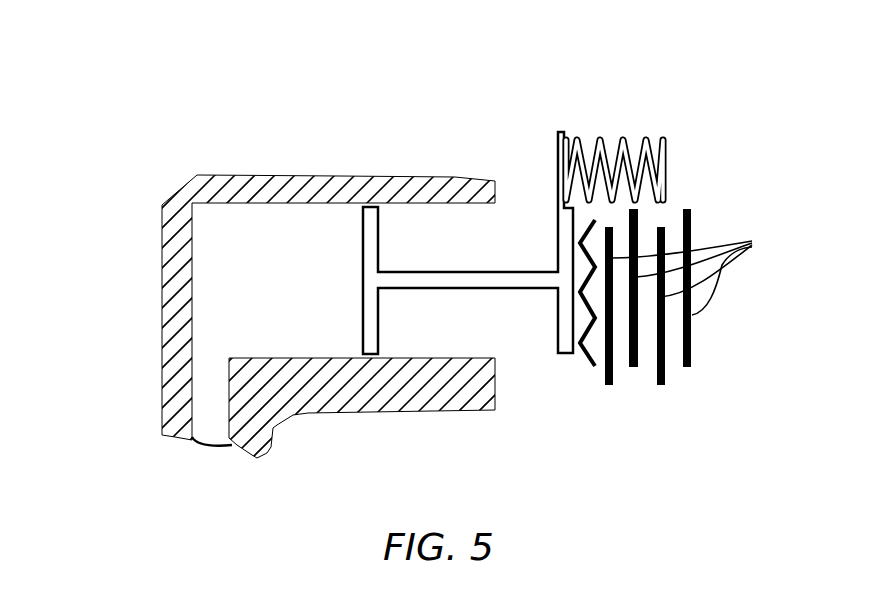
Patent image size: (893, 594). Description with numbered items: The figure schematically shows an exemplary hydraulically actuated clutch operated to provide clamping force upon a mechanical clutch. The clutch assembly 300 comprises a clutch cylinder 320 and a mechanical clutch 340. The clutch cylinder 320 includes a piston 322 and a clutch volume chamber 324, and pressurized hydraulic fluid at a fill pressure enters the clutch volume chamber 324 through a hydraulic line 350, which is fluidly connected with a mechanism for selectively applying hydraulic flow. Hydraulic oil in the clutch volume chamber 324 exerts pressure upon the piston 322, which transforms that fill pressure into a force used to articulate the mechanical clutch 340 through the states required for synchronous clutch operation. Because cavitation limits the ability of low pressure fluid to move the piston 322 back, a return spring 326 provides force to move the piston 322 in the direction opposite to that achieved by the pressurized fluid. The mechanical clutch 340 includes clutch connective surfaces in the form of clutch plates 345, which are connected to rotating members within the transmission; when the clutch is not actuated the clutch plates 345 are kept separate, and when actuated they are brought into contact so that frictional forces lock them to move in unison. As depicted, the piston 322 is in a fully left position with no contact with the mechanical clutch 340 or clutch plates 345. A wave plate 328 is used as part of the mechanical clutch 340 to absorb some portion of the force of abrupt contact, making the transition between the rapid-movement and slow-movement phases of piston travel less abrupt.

The clutch assembly 300 is at (175, 84).
The clutch cylinder 320 is at (246, 205).
The piston 322 is at (378, 247).
The clutch volume chamber 324 is at (218, 250).
The return spring 326 is at (618, 140).
The wave plate 328 is at (595, 366).
The mechanical clutch 340 is at (663, 368).
The clutch plates 345 is at (706, 272).
The hydraulic line 350 is at (210, 402).